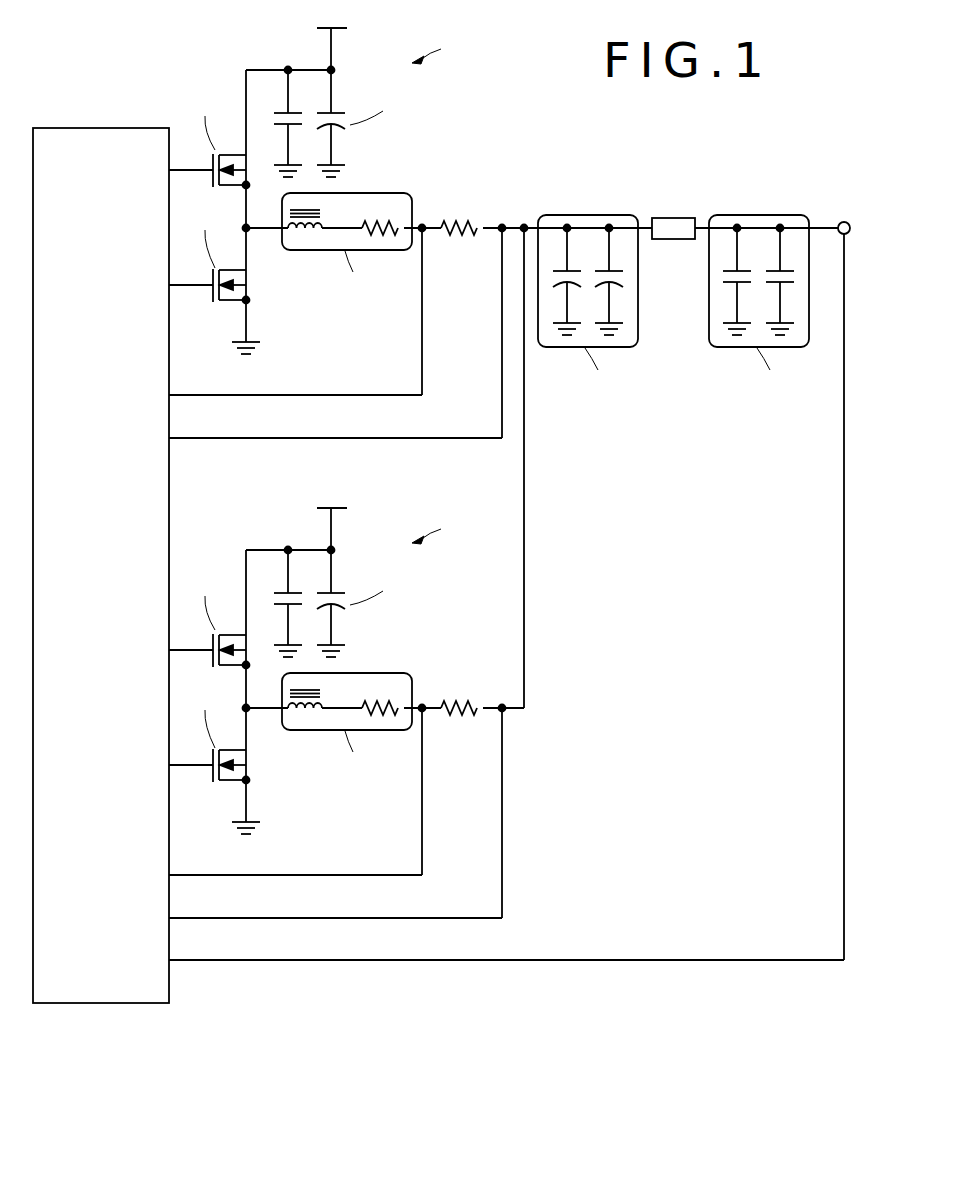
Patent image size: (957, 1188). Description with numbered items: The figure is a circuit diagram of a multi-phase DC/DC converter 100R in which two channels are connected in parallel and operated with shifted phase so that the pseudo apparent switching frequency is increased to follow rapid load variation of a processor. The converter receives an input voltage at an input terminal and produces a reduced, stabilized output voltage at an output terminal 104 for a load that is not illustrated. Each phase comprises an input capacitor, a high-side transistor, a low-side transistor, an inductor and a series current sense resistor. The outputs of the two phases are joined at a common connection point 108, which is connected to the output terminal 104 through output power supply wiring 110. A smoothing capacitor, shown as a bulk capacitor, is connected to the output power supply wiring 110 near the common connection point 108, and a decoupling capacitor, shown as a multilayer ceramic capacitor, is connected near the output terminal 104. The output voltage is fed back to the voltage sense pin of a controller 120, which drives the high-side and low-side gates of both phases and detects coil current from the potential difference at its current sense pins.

The multi-phase DC/DC converter 100R is at (488, 1064).
The output terminal 104 is at (850, 233).
The common connection point 108 is at (524, 224).
The output power supply wiring 110 is at (672, 241).
The controller 120 is at (103, 127).